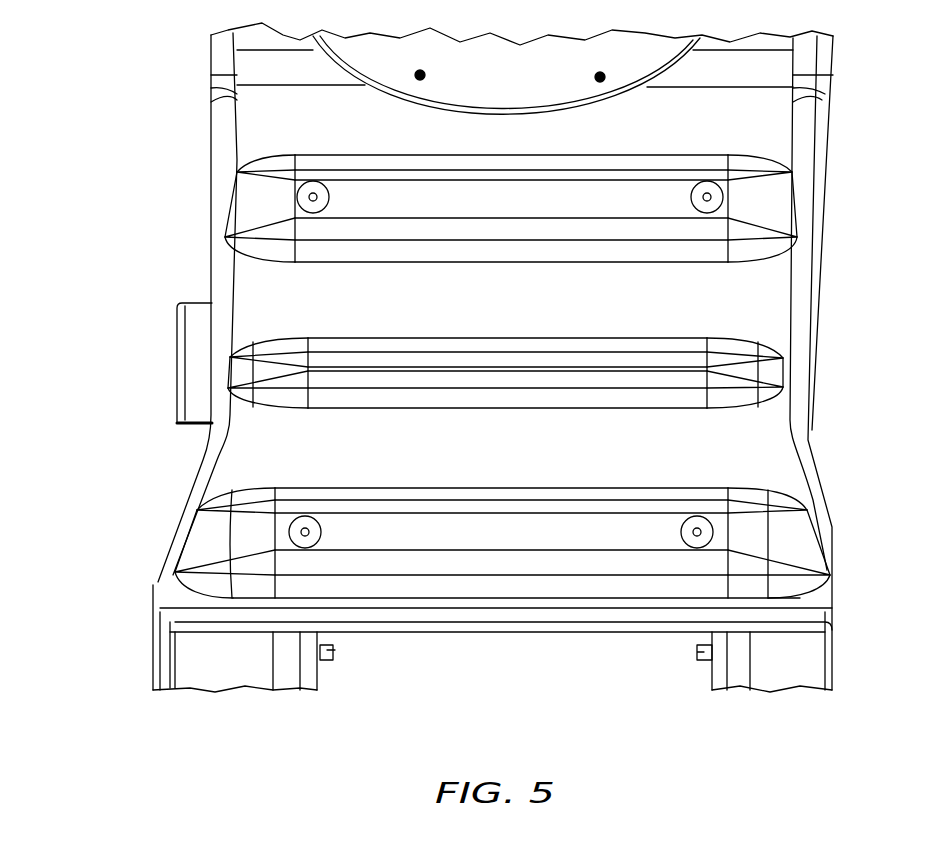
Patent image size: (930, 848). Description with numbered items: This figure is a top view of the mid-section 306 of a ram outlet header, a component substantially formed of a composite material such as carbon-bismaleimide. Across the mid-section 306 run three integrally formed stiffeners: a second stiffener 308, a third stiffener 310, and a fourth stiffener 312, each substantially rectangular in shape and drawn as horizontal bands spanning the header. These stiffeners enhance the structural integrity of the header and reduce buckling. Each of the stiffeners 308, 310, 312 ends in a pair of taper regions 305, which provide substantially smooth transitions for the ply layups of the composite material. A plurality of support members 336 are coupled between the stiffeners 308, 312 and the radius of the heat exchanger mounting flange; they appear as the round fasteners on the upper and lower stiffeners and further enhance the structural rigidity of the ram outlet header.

The taper regions 305 is at (258, 207).
The mid-section 306 is at (735, 310).
The second stiffener 308 is at (350, 528).
The third stiffener 310 is at (340, 358).
The fourth stiffener 312 is at (375, 193).
The support members 336 is at (298, 198).